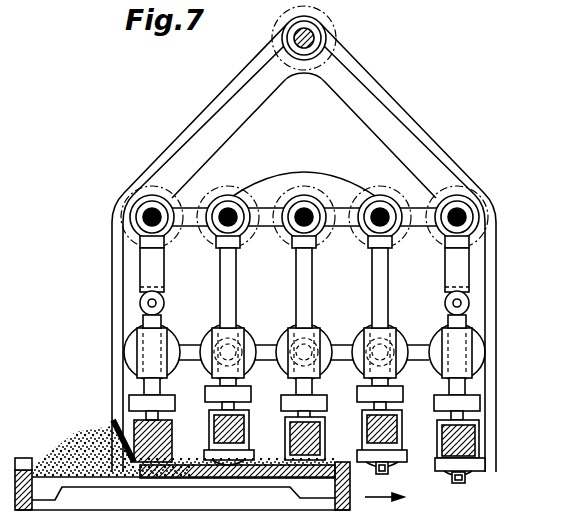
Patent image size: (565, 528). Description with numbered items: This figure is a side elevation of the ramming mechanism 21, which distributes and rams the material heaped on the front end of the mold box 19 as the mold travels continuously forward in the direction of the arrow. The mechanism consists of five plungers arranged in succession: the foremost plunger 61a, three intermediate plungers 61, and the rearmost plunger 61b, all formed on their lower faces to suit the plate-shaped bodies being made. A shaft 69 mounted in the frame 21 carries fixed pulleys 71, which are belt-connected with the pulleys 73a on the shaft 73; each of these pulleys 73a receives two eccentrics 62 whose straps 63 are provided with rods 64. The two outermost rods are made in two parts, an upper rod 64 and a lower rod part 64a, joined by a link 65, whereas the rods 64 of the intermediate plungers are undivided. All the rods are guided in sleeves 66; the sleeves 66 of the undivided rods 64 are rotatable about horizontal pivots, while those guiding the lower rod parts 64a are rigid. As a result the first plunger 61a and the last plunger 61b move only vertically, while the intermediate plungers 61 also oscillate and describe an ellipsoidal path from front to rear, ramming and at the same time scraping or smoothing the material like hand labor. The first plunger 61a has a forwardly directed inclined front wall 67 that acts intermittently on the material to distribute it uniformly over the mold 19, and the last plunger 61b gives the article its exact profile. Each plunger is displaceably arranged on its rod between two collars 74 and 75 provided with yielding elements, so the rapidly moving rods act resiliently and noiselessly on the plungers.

The mold box 19 is at (182, 484).
The ramming mechanism 21 is at (200, 104).
The plunger 61 is at (244, 436).
The first plunger 61a is at (172, 436).
The last plunger 61b is at (452, 440).
The eccentric 62 is at (162, 227).
The strap 63 is at (175, 205).
The rod 64 is at (157, 264).
The lower rod part 64a is at (161, 318).
The link 65 is at (165, 302).
The sleeve 66 is at (167, 378).
The inclined front wall 67 is at (117, 422).
The shaft 69 is at (314, 40).
The pulley 71 is at (284, 40).
The shaft 73 is at (140, 216).
The pulley 73a is at (306, 193).
The collar 74 is at (167, 403).
The collar 75 is at (442, 472).